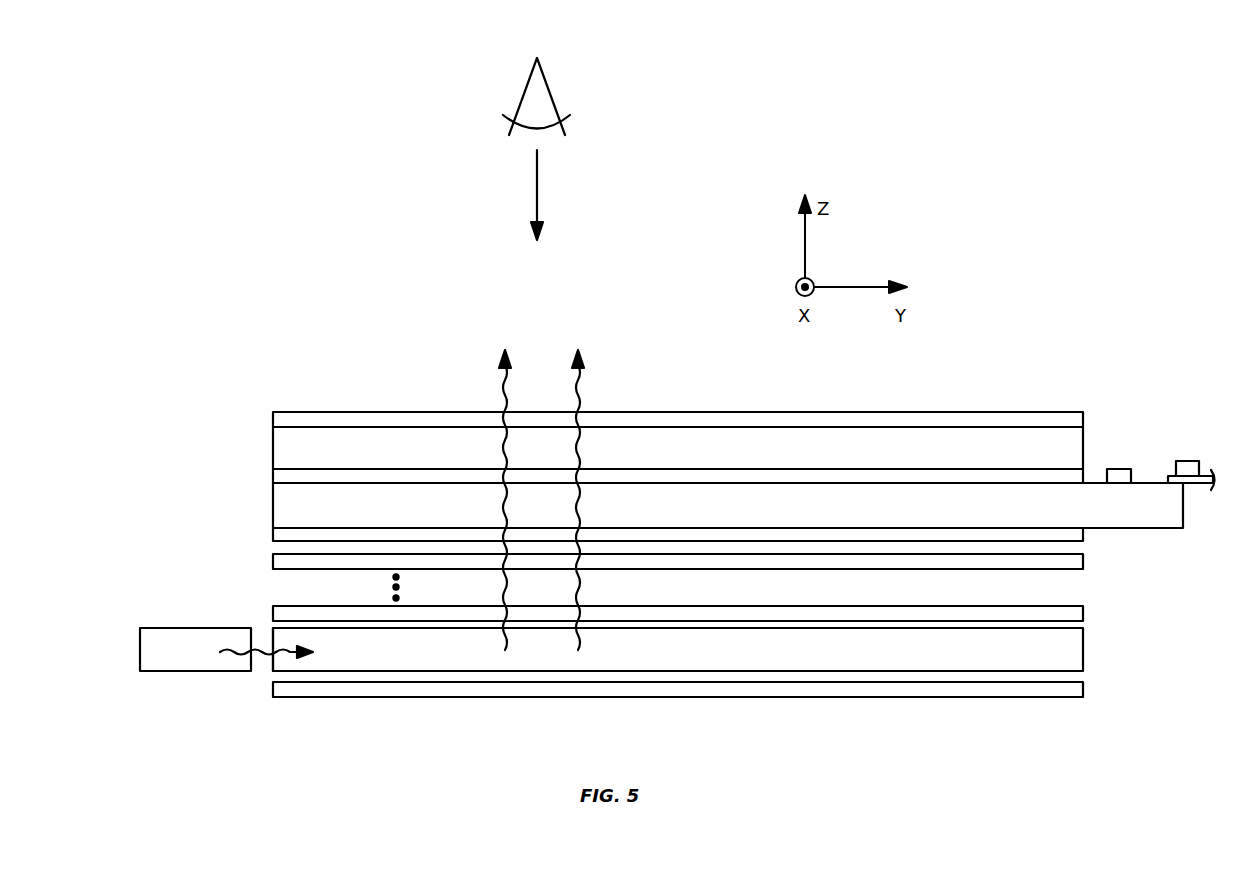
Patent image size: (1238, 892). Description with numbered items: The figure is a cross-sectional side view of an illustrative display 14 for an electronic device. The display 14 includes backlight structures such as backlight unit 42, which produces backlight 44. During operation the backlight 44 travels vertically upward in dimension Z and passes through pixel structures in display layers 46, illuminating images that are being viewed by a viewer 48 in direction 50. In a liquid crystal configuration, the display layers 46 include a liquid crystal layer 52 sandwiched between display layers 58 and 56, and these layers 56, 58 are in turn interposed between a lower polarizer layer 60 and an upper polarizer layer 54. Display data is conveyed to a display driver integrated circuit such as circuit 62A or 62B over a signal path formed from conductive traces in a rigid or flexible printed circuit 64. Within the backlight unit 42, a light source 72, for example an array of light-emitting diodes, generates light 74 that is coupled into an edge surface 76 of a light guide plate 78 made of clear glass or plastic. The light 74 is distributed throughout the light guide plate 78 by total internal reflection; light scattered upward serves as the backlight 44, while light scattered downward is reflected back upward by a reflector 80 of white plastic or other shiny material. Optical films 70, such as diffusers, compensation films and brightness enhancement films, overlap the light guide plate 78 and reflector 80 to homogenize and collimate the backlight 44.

The display 14 is at (1009, 330).
The backlight unit 42 is at (1102, 550).
The backlight 44 is at (571, 389).
The display layers 46 is at (224, 408).
The viewer 48 is at (552, 92).
The direction 50 is at (537, 198).
The liquid crystal layer 52 is at (352, 475).
The upper polarizer layer 54 is at (301, 418).
The display layer 56 is at (281, 446).
The display layer 58 is at (281, 499).
The lower polarizer layer 60 is at (287, 535).
The display driver integrated circuit 62A is at (1120, 469).
The display driver integrated circuit 62B is at (1188, 461).
The printed circuit 64 is at (1197, 485).
The optical films 70 is at (268, 554).
The light source 72 is at (150, 652).
The light 74 is at (237, 647).
The edge surface 76 is at (271, 663).
The light guide plate 78 is at (389, 663).
The reflector 80 is at (476, 692).